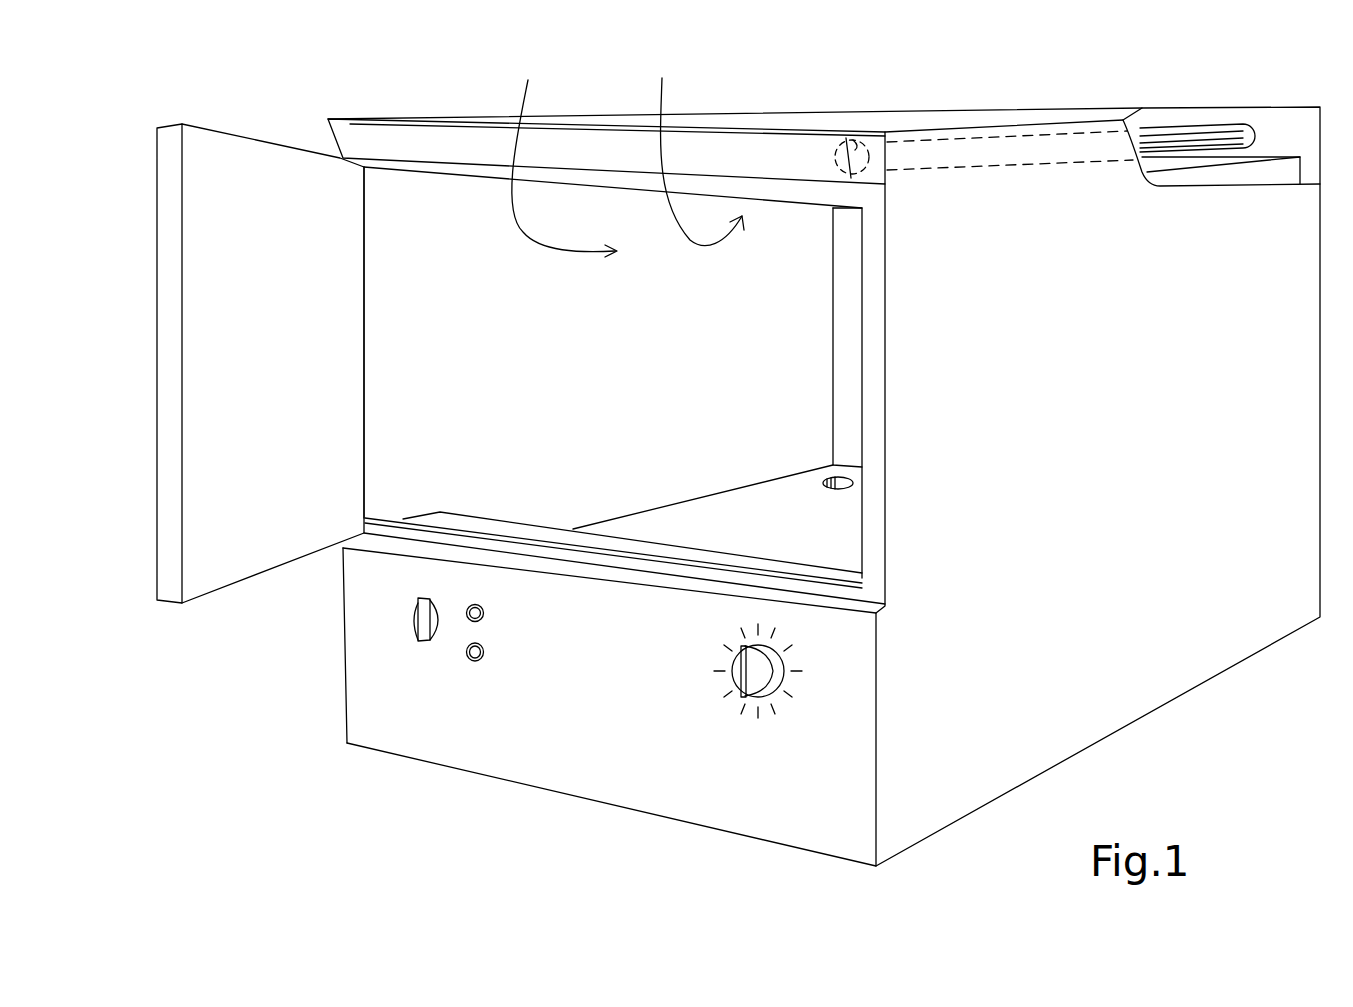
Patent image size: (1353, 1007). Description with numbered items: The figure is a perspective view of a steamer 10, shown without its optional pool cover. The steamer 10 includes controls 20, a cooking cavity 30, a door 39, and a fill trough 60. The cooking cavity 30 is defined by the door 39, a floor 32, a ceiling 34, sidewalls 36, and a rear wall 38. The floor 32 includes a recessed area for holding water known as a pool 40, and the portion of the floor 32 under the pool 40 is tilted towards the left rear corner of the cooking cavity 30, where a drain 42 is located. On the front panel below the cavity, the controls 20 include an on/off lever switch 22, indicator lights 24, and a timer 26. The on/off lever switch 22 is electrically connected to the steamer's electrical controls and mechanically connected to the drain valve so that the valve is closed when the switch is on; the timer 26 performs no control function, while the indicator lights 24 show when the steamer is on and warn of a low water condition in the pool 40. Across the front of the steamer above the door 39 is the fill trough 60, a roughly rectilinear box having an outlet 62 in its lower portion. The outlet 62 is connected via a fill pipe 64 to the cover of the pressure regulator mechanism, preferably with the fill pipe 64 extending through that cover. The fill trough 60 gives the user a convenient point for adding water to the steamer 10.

The steamer 10 is at (1022, 87).
The controls 20 is at (357, 635).
The on/off lever switch 22 is at (413, 632).
The indicator lights 24 is at (485, 617).
The timer 26 is at (778, 695).
The cooking cavity 30 is at (564, 153).
The floor 32 is at (820, 532).
The ceiling 34 is at (698, 146).
The sidewalls 36 is at (574, 372).
The rear wall 38 is at (850, 283).
The door 39 is at (203, 125).
The pool 40 is at (680, 512).
The drain 42 is at (836, 478).
The fill trough 60 is at (390, 130).
The outlet 62 is at (857, 130).
The fill pipe 64 is at (1223, 125).